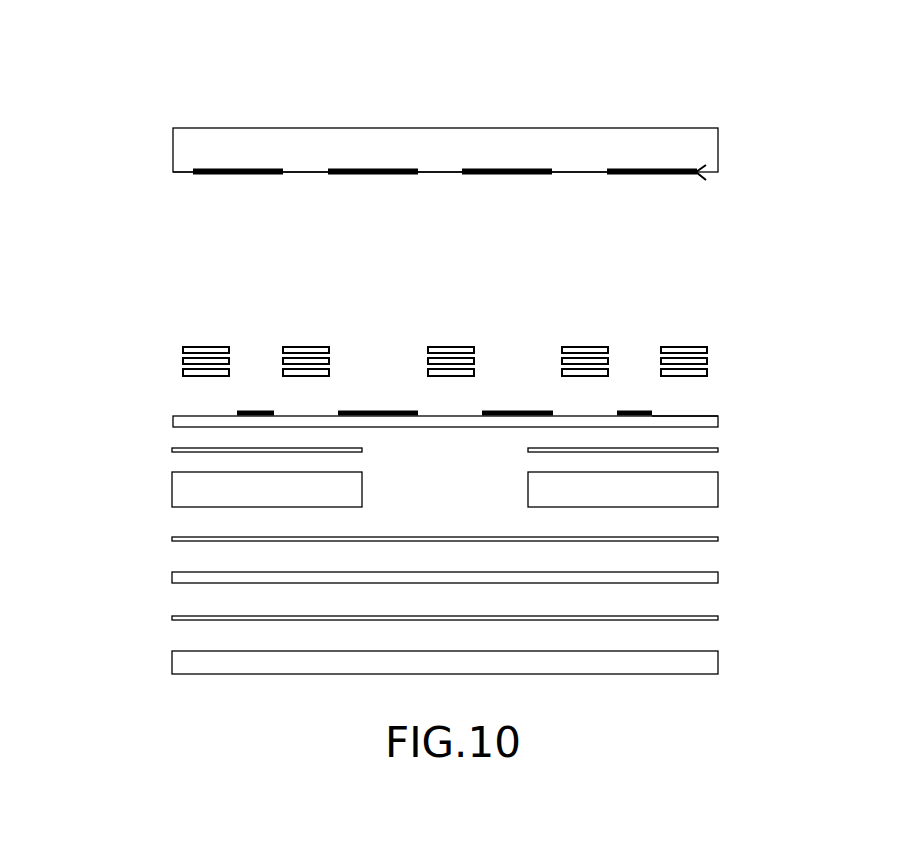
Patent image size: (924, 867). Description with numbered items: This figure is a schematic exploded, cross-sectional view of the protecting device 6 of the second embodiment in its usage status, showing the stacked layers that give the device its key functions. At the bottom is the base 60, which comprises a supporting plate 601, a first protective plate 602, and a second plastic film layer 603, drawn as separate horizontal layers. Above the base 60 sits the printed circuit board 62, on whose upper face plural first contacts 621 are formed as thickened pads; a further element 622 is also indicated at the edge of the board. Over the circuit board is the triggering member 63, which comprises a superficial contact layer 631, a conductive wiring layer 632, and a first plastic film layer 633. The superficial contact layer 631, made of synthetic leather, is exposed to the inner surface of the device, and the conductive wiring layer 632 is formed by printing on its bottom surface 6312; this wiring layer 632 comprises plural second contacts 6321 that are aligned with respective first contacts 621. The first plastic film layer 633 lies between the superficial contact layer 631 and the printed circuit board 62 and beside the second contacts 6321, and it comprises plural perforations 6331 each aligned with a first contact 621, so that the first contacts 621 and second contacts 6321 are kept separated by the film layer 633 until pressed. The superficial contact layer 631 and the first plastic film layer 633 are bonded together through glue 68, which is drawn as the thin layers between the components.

The protecting device 6 is at (251, 77).
The base 60 is at (83, 462).
The supporting plate 601 is at (180, 497).
The first protective plate 602 is at (180, 668).
The second plastic film layer 603 is at (180, 580).
The printed circuit board 62 is at (200, 425).
The first contacts 621 is at (518, 413).
The touch substrate 622 is at (702, 416).
The triggering member 63 is at (817, 228).
The superficial contact layer 631 is at (627, 140).
The bottom surface 6312 is at (183, 172).
The conductive wiring layer 632 is at (698, 173).
The second contacts 6321 is at (515, 175).
The first plastic film layer 633 is at (190, 361).
The perforations 6331 is at (255, 362).
The glue 68 is at (205, 350).